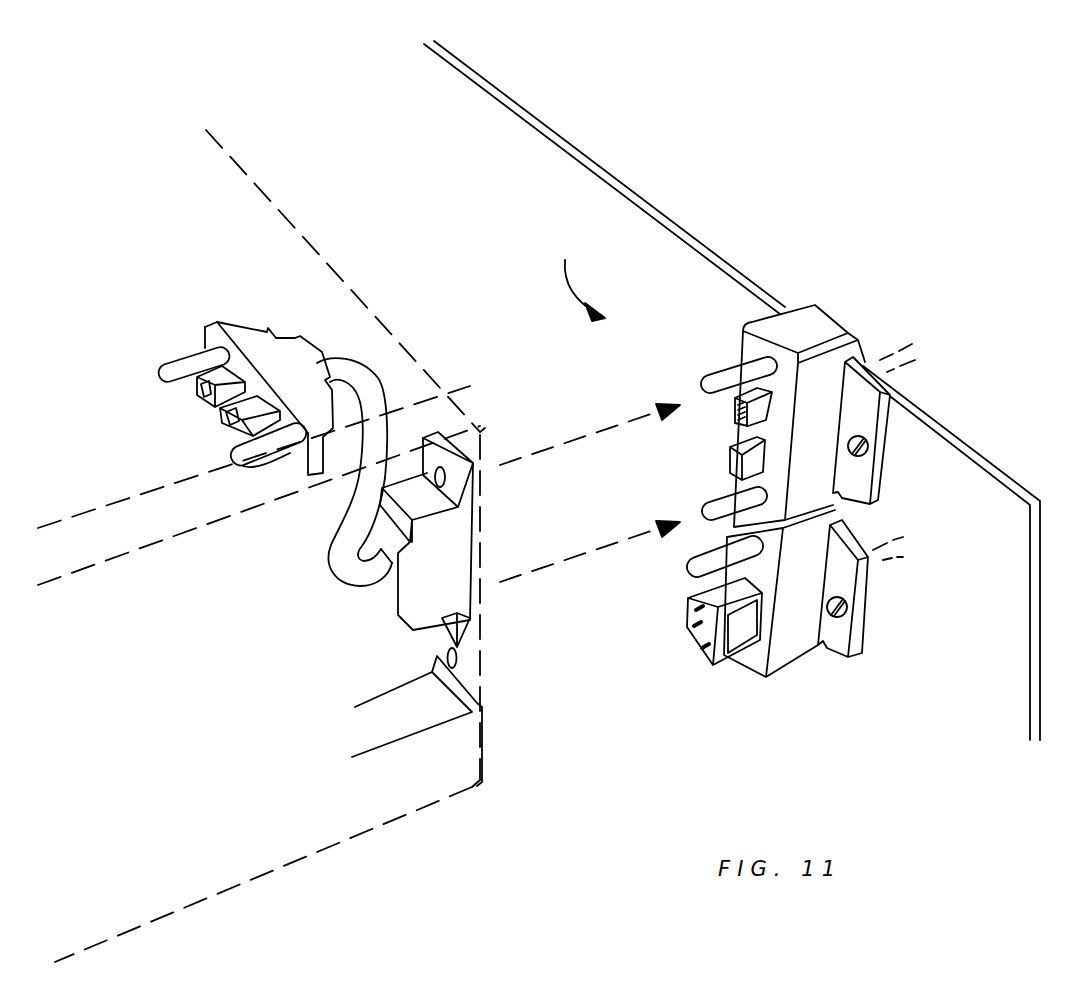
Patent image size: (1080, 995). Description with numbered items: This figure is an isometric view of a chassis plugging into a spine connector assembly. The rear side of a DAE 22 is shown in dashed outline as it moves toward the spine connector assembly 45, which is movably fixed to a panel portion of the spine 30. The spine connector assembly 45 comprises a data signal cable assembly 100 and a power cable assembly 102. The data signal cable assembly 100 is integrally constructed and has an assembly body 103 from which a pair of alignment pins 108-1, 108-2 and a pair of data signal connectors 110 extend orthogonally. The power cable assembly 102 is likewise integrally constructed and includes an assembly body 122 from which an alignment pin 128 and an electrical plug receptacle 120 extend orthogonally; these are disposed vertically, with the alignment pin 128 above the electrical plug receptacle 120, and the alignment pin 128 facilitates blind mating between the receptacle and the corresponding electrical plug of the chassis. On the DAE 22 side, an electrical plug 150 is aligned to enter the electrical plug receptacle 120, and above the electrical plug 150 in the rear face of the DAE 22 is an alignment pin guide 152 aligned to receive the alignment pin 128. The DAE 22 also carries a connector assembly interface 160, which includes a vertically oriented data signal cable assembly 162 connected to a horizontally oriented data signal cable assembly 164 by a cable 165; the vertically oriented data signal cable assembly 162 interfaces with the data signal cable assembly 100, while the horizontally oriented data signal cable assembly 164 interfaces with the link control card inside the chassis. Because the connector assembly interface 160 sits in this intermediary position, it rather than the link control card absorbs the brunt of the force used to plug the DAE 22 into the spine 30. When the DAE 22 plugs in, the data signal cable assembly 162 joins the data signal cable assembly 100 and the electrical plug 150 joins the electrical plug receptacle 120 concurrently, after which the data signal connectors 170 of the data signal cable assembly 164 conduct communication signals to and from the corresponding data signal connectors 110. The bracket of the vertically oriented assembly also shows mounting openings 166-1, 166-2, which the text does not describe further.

The DAE chassis 22 is at (204, 696).
The spine 30 is at (999, 708).
The spine connector assembly 45 is at (577, 258).
The data signal cable assembly 100 is at (805, 333).
The power cable assembly 102 is at (783, 688).
The assembly body 103 is at (839, 448).
The alignment pin 108-1 is at (712, 381).
The alignment pin 108-2 is at (714, 502).
The data signal connectors 110 is at (728, 468).
The electrical plug receptacle 120 is at (700, 653).
The assembly body 122 is at (819, 593).
The alignment pin 128 is at (698, 564).
The electrical plug 150 is at (482, 757).
The alignment pin guide 152 is at (458, 660).
The connector assembly interface 160 is at (373, 345).
The vertically oriented data signal cable assembly 162 is at (467, 539).
The horizontally oriented data signal cable assembly 164 is at (304, 373).
The cable 165 is at (335, 472).
The mounting hole 166-1 is at (446, 472).
The mounting hole 166-2 is at (437, 620).
The data signal connectors 170 is at (228, 428).